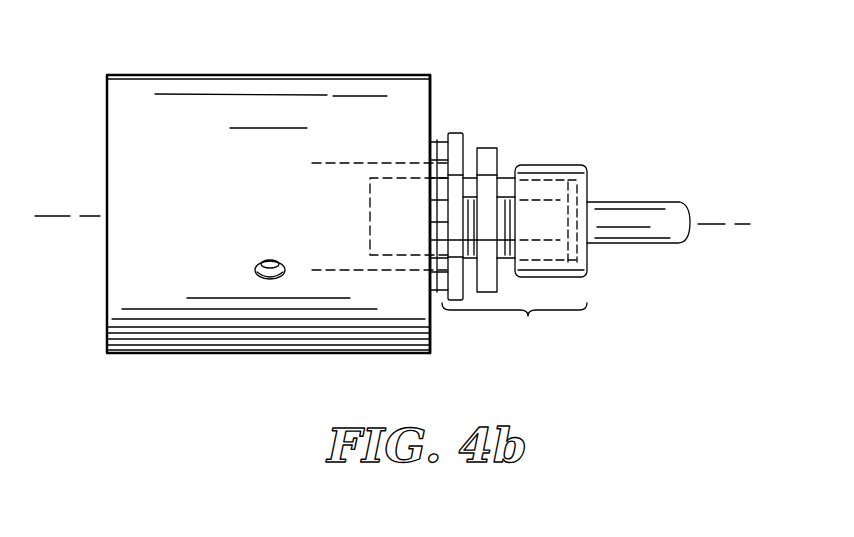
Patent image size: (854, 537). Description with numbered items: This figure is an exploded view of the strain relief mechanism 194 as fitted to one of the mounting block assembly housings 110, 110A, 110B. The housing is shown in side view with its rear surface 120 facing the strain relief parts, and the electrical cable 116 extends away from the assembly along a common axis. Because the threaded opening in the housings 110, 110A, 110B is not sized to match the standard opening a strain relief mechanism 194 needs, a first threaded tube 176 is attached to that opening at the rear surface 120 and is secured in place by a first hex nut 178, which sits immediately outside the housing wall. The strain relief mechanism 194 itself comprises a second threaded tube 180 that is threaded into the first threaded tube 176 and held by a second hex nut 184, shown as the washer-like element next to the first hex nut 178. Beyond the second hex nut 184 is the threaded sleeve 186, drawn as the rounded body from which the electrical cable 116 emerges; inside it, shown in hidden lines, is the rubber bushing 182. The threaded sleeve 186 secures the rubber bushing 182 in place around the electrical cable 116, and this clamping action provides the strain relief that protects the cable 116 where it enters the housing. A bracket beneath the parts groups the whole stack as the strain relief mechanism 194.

The mounting block assembly housing 110 is at (330, 182).
The mounting block assembly housing 110A is at (330, 182).
The mounting block assembly housing 110B is at (352, 93).
The rear surface 120 is at (433, 106).
The first threaded tube 176 is at (348, 162).
The second threaded tube 180 is at (368, 210).
The first hex nut 178 is at (455, 133).
The second hex nut 184 is at (489, 148).
The threaded sleeve 186 is at (563, 167).
The rubber bushing 182 is at (592, 180).
The electrical cable 116 is at (655, 215).
The strain relief mechanism 194 is at (514, 321).